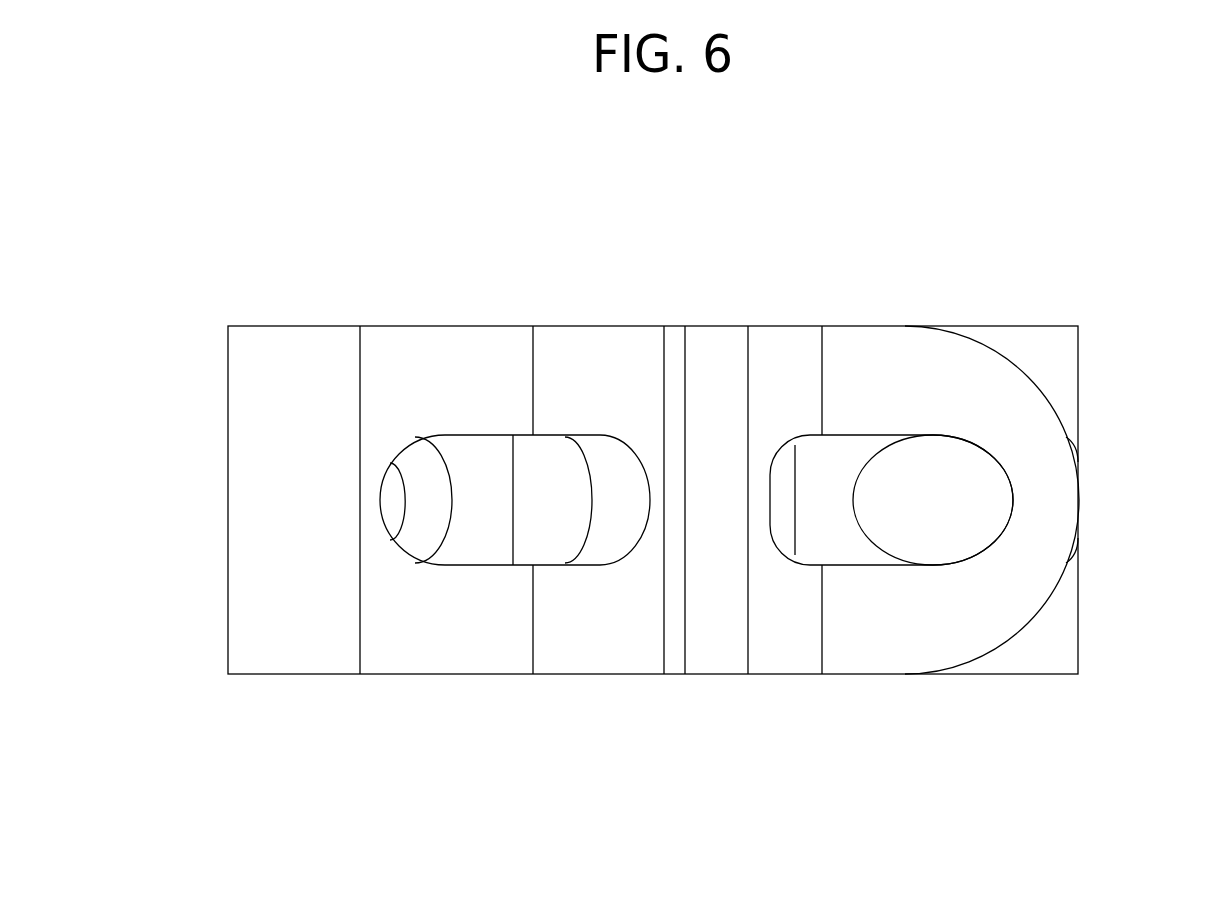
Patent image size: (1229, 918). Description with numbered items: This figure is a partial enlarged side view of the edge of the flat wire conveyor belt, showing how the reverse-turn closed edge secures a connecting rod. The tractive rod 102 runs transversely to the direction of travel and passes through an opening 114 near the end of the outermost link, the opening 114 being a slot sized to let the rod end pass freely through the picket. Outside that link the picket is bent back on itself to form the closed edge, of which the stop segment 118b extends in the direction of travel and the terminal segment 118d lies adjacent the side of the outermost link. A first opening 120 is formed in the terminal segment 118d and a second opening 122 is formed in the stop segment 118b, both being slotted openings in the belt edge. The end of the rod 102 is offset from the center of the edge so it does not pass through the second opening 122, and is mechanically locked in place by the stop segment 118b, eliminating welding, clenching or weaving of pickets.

The tractive rod 102 is at (392, 502).
The opening 114 is at (433, 452).
The stop segment 118b is at (498, 372).
The terminal segment 118d is at (938, 375).
The first opening 120 is at (988, 457).
The second opening 122 is at (478, 565).